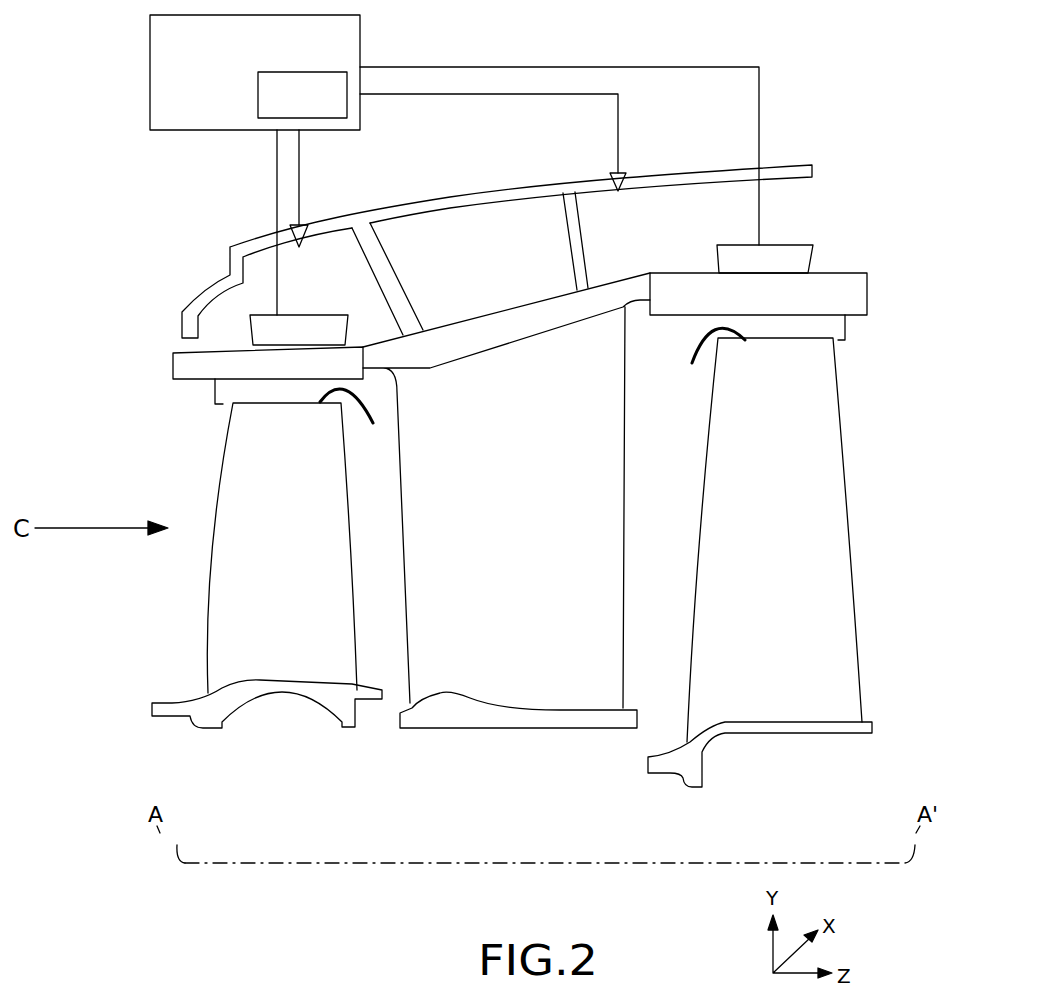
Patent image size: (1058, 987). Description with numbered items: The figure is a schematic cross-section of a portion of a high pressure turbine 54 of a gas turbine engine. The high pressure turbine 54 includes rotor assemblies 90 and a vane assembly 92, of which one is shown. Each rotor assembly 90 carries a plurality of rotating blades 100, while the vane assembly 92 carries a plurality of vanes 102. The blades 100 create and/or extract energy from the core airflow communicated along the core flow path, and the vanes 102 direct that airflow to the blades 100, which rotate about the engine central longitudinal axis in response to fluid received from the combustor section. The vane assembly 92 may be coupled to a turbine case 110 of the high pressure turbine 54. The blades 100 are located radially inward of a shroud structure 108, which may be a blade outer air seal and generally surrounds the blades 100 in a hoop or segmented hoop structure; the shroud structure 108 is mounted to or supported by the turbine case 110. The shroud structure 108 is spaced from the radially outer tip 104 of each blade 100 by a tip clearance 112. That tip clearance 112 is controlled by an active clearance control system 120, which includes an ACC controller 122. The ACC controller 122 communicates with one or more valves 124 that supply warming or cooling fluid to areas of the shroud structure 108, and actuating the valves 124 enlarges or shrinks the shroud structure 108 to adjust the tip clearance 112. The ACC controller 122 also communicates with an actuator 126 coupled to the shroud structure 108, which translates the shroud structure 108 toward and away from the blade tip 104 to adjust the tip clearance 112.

The high pressure turbine 54 is at (167, 210).
The rotor assembly 90 is at (282, 709).
The vane assembly 92 is at (477, 733).
The rotating blade 100 is at (298, 506).
The vane 102 is at (543, 470).
The radially outer tip 104 is at (532, 392).
The shroud structure 108 is at (190, 365).
The turbine case 110 is at (495, 195).
The tip clearance 112 is at (210, 388).
The active clearance control system 120 is at (270, 56).
The ACC controller 122 is at (317, 109).
The valve 124 is at (302, 224).
The actuator 126 is at (270, 332).